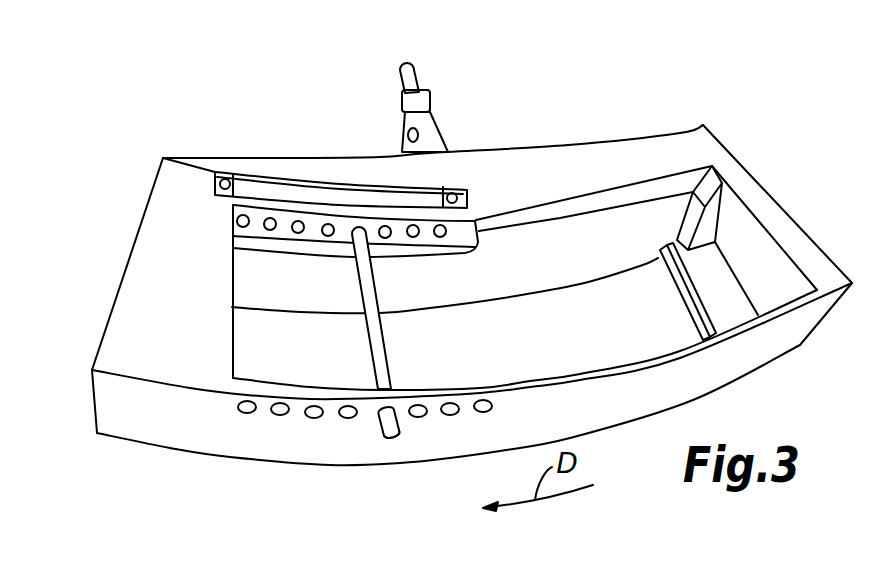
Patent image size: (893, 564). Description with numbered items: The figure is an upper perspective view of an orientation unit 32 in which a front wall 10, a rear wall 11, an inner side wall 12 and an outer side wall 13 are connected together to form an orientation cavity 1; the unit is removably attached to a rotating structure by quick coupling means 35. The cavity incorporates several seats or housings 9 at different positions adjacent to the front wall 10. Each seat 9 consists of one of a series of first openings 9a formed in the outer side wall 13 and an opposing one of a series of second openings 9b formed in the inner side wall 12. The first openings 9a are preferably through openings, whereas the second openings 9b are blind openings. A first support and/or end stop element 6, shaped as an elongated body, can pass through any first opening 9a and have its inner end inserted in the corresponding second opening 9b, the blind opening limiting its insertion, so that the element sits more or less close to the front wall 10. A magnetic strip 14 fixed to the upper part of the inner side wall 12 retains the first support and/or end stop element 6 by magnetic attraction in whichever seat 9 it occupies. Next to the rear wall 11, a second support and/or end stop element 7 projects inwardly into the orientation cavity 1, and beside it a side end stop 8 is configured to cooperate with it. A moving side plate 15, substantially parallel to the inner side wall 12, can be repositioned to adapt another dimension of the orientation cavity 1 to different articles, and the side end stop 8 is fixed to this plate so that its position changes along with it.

The orientation cavity 1 is at (537, 355).
The first support and/or end stop element 6 is at (370, 337).
The second support and/or end stop element 7 is at (707, 287).
The side end stop 8 is at (715, 218).
The seat or housing 9 is at (347, 431).
The first opening 9a is at (452, 415).
The second opening 9b is at (417, 234).
The front wall 10 is at (233, 330).
The rear wall 11 is at (781, 281).
The inner side wall 12 is at (580, 177).
The outer side wall 13 is at (643, 397).
The magnetic strip 14 is at (300, 192).
The moving side plate 15 is at (580, 262).
The orientation unit 32 is at (520, 126).
The quick coupling means 35 is at (427, 103).